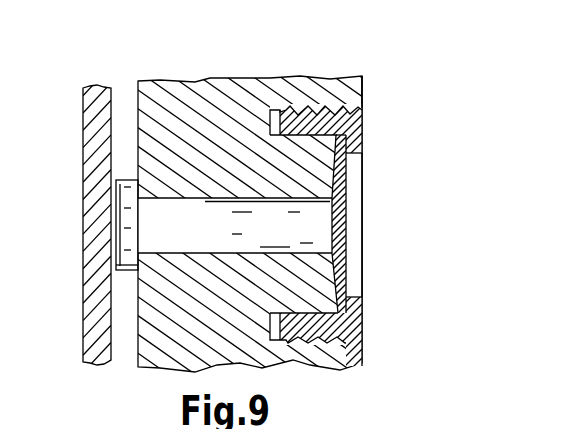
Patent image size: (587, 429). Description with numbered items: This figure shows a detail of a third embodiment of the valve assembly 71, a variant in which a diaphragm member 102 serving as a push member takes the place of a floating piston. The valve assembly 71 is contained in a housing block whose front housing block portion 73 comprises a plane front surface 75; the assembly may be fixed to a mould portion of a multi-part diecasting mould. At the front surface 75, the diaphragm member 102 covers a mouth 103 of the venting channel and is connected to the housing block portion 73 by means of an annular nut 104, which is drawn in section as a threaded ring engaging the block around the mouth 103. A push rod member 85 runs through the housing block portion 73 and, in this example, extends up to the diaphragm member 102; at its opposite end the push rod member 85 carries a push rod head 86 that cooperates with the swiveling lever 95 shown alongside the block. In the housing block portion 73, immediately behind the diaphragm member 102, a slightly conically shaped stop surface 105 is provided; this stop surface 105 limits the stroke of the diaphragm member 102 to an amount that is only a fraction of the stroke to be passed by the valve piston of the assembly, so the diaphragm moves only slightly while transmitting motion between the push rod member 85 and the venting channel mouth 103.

The valve assembly 71 is at (366, 72).
The front housing block portion 73 is at (243, 95).
The front surface 75 is at (362, 101).
The push rod member 85 is at (183, 222).
The push rod head 86 is at (124, 218).
The swiveling lever 95 is at (93, 157).
The diaphragm member 102 is at (338, 173).
The mouth 103 is at (352, 200).
The annular nut 104 is at (362, 124).
The stop surface 105 is at (332, 268).